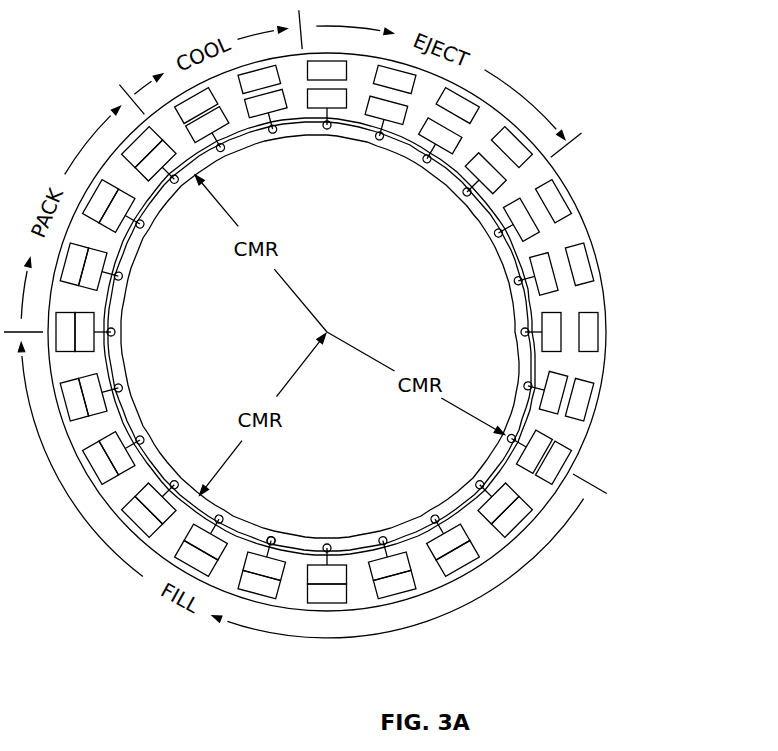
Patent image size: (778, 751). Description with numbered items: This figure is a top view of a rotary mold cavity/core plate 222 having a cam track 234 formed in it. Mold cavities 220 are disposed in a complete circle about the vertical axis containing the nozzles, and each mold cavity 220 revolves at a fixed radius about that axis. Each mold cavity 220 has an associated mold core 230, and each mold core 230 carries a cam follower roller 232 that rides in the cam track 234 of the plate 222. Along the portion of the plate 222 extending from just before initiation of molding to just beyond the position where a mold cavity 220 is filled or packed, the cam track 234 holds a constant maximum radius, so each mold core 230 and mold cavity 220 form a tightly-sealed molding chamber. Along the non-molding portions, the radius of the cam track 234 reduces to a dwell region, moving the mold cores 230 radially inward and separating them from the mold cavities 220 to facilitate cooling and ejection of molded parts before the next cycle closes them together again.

The mold cavity 220 is at (188, 552).
The mold cavity/core plate 222 is at (580, 263).
The mold core 230 is at (213, 122).
The cam follower roller 232 is at (271, 541).
The cam track 234 is at (294, 546).